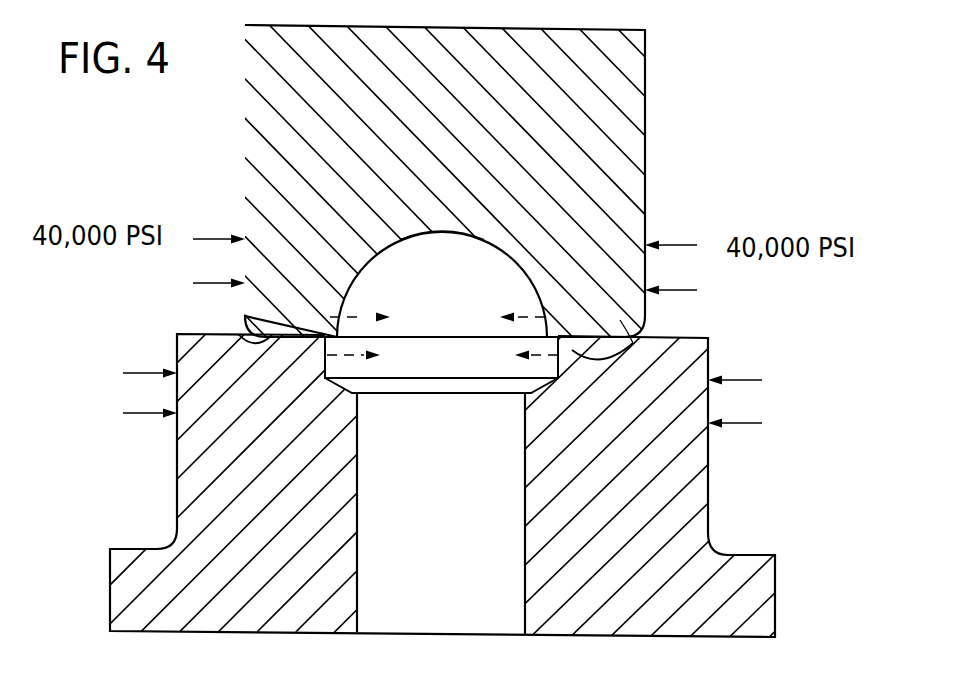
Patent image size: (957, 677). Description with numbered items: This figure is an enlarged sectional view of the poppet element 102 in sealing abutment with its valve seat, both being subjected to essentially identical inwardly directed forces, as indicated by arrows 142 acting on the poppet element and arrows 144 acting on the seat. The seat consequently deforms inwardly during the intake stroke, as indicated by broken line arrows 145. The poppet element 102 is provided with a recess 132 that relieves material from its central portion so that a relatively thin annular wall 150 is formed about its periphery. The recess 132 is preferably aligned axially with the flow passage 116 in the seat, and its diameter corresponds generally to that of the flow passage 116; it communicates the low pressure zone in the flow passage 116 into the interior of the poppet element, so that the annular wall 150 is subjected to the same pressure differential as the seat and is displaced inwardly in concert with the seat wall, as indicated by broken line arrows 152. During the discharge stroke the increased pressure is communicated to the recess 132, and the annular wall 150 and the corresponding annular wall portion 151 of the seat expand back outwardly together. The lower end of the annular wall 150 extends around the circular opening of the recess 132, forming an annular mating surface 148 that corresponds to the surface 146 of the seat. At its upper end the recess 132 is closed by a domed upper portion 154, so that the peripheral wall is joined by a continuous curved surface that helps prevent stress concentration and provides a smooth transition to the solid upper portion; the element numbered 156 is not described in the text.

The poppet element 102 is at (248, 133).
The flow passage 116 is at (455, 528).
The recess 132 is at (485, 300).
The arrows 142 is at (200, 239).
The arrows 144 is at (140, 373).
The broken line arrows 145 is at (545, 351).
The surface of the seat 146 is at (218, 333).
The annular mating surface 148 is at (226, 333).
The annular wall 150 is at (348, 308).
The annular wall portion of the valve seat 151 is at (633, 342).
The broken line arrows 152 is at (527, 313).
The domed upper portion 154 is at (441, 232).
The recess 156 is at (432, 362).